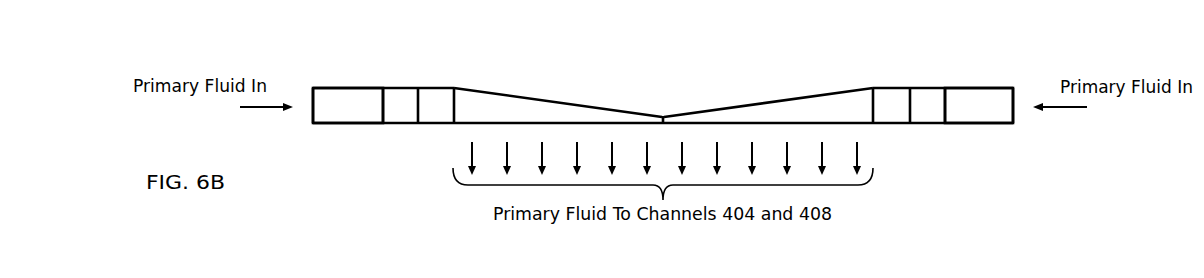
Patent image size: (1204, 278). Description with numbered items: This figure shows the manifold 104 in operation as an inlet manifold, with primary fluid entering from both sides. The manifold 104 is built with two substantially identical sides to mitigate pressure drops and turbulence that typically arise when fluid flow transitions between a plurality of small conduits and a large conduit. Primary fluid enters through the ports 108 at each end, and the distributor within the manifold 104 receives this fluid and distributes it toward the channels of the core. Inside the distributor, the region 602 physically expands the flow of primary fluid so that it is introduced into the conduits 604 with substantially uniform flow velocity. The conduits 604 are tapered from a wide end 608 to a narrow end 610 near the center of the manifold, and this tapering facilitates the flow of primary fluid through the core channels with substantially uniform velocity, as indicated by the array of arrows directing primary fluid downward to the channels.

The manifold 104 is at (287, 40).
The ports 108 is at (366, 114).
The region 602 is at (412, 150).
The conduits 604 is at (558, 105).
The wide end 608 is at (468, 74).
The narrow end 610 is at (663, 103).